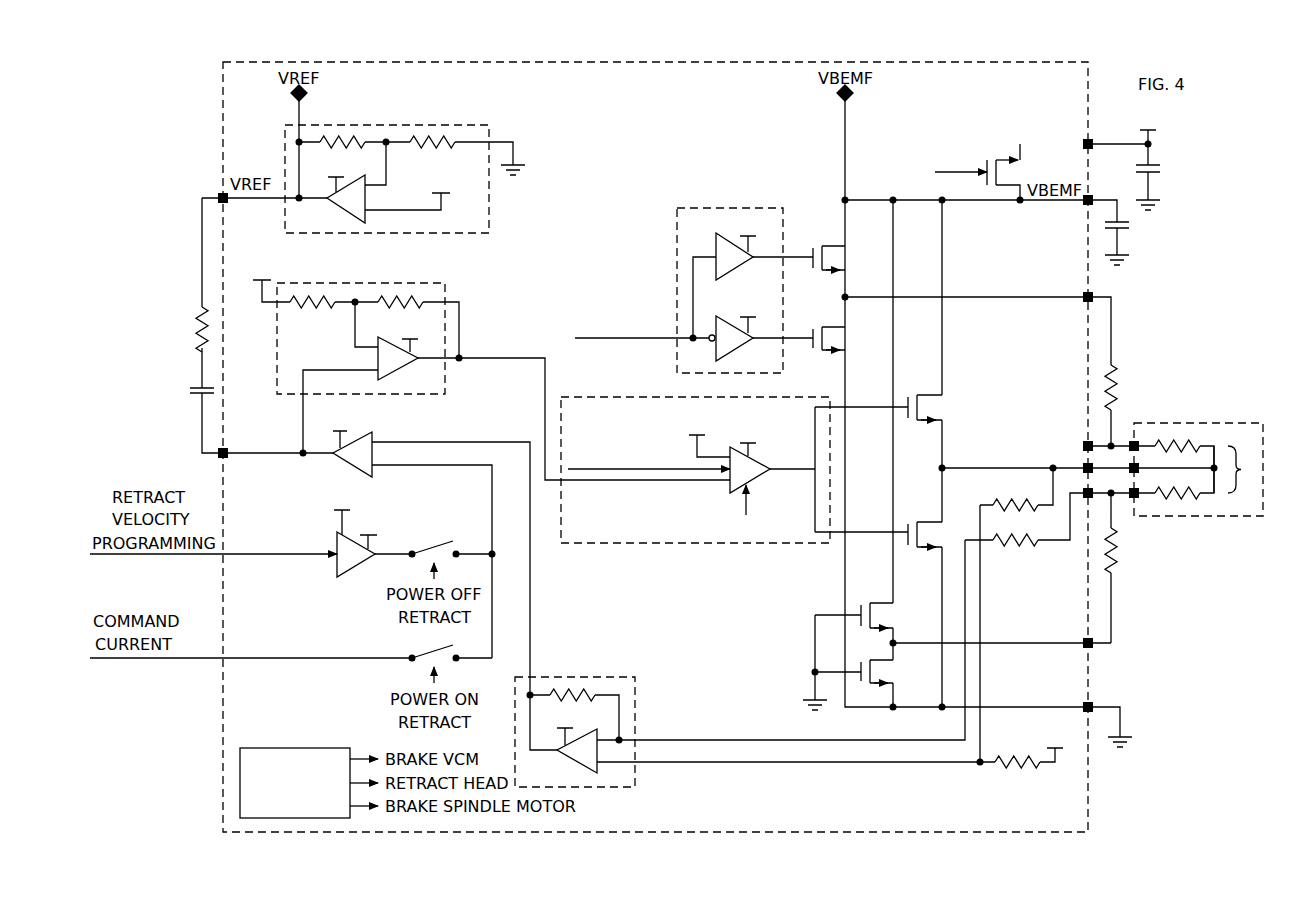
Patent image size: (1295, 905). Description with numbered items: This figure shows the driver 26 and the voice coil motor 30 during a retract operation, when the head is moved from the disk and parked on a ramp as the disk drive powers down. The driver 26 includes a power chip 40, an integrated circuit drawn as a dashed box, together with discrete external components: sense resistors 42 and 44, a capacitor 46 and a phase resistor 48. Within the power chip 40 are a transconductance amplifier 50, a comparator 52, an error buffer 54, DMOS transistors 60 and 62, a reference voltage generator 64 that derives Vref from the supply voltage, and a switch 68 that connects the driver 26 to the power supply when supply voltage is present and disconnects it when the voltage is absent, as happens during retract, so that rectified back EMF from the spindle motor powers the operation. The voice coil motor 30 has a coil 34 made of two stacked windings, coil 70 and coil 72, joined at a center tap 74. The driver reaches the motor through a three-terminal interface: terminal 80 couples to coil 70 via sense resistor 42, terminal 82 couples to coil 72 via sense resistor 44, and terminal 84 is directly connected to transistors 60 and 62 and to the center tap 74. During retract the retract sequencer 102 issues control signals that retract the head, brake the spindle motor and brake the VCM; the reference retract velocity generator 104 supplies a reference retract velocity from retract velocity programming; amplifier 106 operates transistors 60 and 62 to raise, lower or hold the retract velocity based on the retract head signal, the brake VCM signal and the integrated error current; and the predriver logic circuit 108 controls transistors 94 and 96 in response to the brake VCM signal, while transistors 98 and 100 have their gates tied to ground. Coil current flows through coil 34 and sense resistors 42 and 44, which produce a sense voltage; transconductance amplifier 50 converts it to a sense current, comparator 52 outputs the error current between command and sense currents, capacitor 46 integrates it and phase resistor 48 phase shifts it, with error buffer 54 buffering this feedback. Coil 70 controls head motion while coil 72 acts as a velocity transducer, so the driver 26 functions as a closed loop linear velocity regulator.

The driver 26 is at (1128, 790).
The voice coil motor 30 is at (1202, 467).
The coil 34 is at (1247, 469).
The power chip 40 is at (1090, 800).
The sense resistor 42 is at (1118, 385).
The sense resistor 44 is at (1118, 556).
The capacitor 46 is at (190, 390).
The phase resistor 48 is at (197, 330).
The transconductance amplifier 50 is at (578, 677).
The comparator 52 is at (333, 462).
The error buffer 54 is at (372, 283).
The transistor 60 is at (930, 422).
The transistor 62 is at (930, 548).
The reference voltage generator 64 is at (418, 125).
The switch 68 is at (1003, 158).
The coil 70 is at (1178, 440).
The coil 72 is at (1178, 500).
The center tap 74 is at (1220, 485).
The terminal 80 is at (1090, 444).
The terminal 82 is at (1090, 498).
The terminal 84 is at (1090, 467).
The transistor 94 is at (825, 245).
The transistor 96 is at (822, 352).
The transistor 98 is at (870, 603).
The transistor 100 is at (870, 685).
The retract sequencer 102 is at (300, 748).
The reference retract velocity generator 104 is at (337, 570).
The amplifier 106 is at (668, 543).
The predriver logic circuit 108 is at (713, 208).